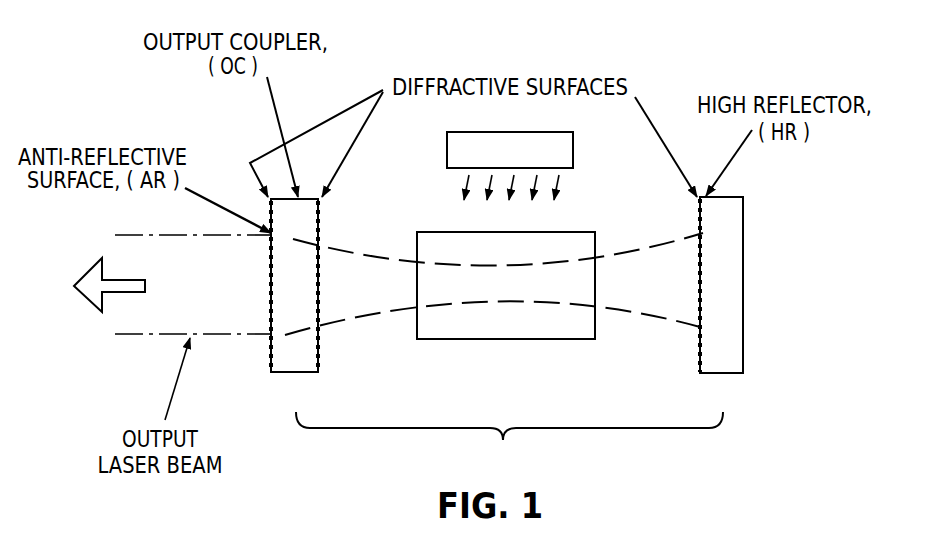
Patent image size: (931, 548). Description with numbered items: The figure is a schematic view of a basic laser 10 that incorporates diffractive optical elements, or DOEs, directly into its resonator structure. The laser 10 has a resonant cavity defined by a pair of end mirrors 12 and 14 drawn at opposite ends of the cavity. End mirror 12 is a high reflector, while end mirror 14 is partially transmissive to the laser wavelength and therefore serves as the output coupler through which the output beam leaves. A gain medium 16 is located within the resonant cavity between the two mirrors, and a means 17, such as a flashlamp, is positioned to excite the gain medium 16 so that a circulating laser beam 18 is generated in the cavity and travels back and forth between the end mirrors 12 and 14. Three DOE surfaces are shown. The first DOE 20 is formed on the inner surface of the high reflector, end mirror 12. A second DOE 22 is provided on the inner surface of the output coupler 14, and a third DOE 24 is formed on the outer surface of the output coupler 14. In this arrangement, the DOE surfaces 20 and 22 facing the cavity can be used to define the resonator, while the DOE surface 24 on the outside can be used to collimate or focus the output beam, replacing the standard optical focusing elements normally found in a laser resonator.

The laser 10 is at (680, 95).
The end mirror 12 is at (740, 328).
The end mirror 14 is at (288, 378).
The gain medium 16 is at (481, 338).
The means 17 is at (574, 148).
The circulating laser beam 18 is at (650, 312).
The first DOE 20 is at (697, 271).
The DOE 22 is at (322, 353).
The DOE 24 is at (271, 268).